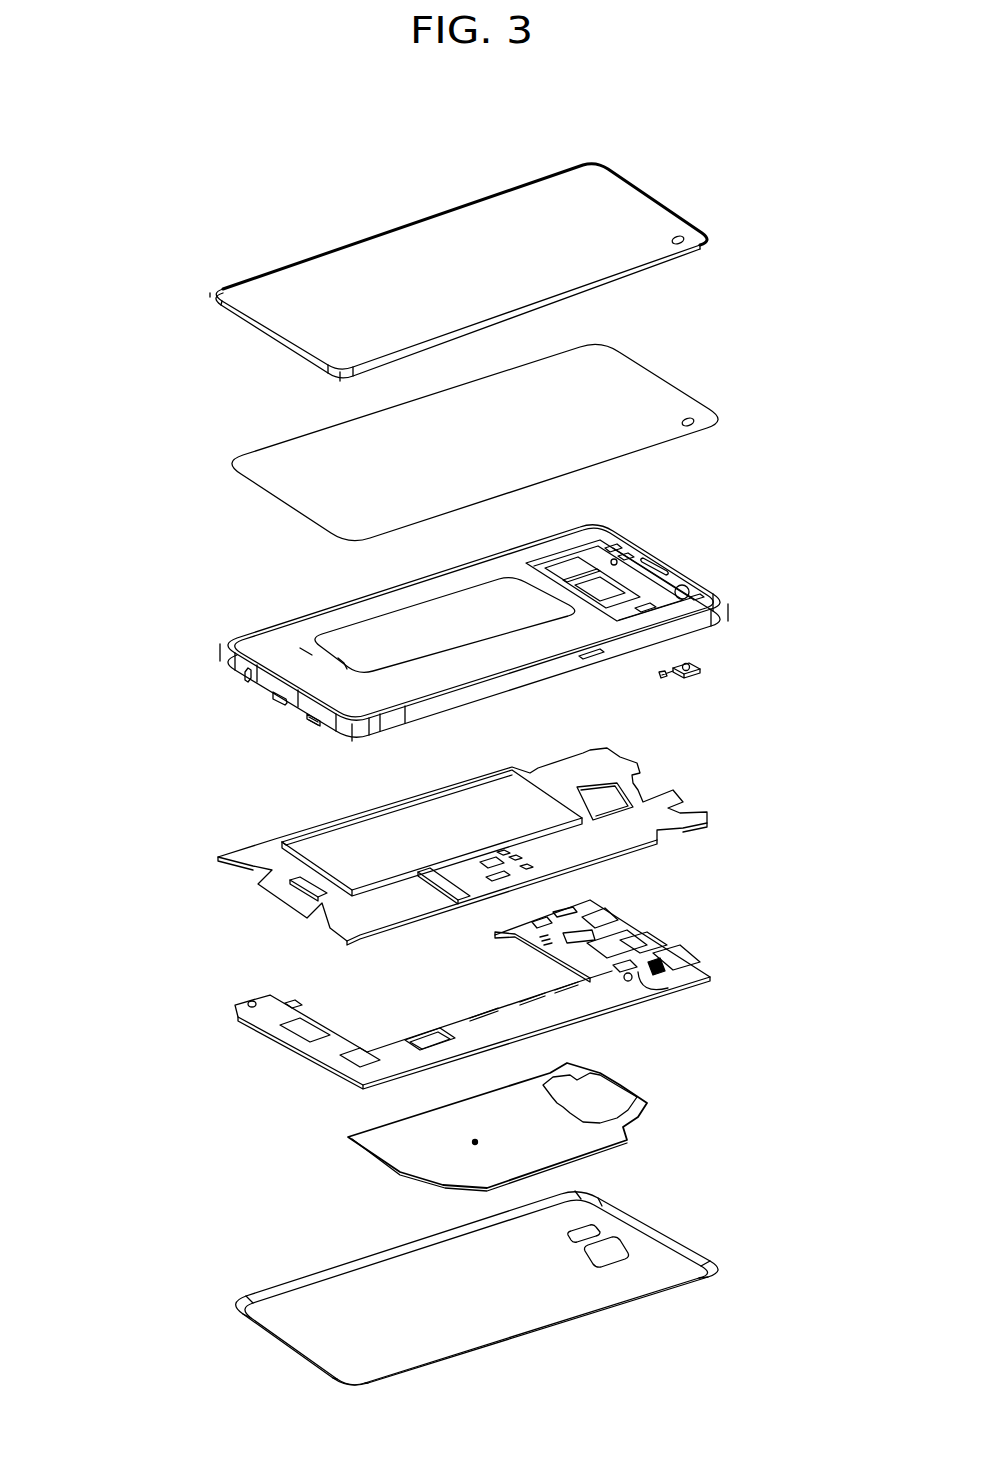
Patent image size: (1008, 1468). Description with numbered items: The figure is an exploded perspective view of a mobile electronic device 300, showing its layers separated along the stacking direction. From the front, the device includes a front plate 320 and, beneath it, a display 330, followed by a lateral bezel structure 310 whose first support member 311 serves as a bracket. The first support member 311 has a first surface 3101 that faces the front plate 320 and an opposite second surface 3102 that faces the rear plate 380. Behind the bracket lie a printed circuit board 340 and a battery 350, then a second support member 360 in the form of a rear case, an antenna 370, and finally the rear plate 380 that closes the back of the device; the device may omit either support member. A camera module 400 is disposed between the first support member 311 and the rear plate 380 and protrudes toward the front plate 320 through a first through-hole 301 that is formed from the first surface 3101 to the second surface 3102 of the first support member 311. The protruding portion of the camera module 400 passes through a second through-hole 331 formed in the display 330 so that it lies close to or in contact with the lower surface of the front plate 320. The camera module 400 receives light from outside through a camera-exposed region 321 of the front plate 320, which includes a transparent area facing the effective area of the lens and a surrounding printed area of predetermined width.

The mobile electronic device 300 is at (180, 423).
The first through-hole 301 is at (688, 588).
The lateral bezel structure 310 is at (490, 633).
The first support member 311 is at (310, 655).
The first surface 3101 is at (533, 647).
The second surface 3102 is at (510, 657).
The front plate 320 is at (505, 272).
The camera-exposed region 321 is at (685, 245).
The display 330 is at (513, 442).
The second through-hole 331 is at (696, 426).
The printed circuit board 340 is at (708, 813).
The battery 350 is at (337, 863).
The second support member 360 is at (710, 970).
The antenna 370 is at (647, 1100).
The rear plate 380 is at (686, 1245).
The camera module 400 is at (703, 667).